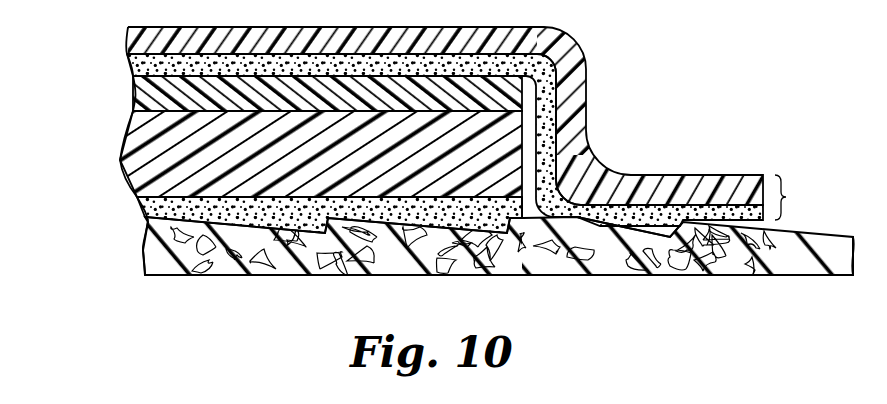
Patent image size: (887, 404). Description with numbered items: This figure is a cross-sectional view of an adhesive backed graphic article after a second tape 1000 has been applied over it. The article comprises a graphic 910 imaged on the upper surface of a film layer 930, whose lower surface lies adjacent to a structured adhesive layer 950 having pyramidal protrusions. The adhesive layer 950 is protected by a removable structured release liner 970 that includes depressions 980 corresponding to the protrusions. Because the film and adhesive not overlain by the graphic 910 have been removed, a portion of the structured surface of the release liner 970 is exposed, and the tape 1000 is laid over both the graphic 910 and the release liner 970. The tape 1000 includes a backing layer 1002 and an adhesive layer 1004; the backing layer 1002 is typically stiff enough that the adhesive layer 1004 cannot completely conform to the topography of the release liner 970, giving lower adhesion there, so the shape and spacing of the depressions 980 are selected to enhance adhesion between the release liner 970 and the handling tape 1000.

The backing layer 1002 is at (136, 38).
The adhesive layer 1004 is at (133, 66).
The graphic 910 is at (136, 97).
The film layer 930 is at (134, 165).
The structured adhesive layer 950 is at (146, 208).
The release liner 970 is at (200, 267).
The depressions 980 is at (670, 237).
The second tape 1000 is at (812, 197).